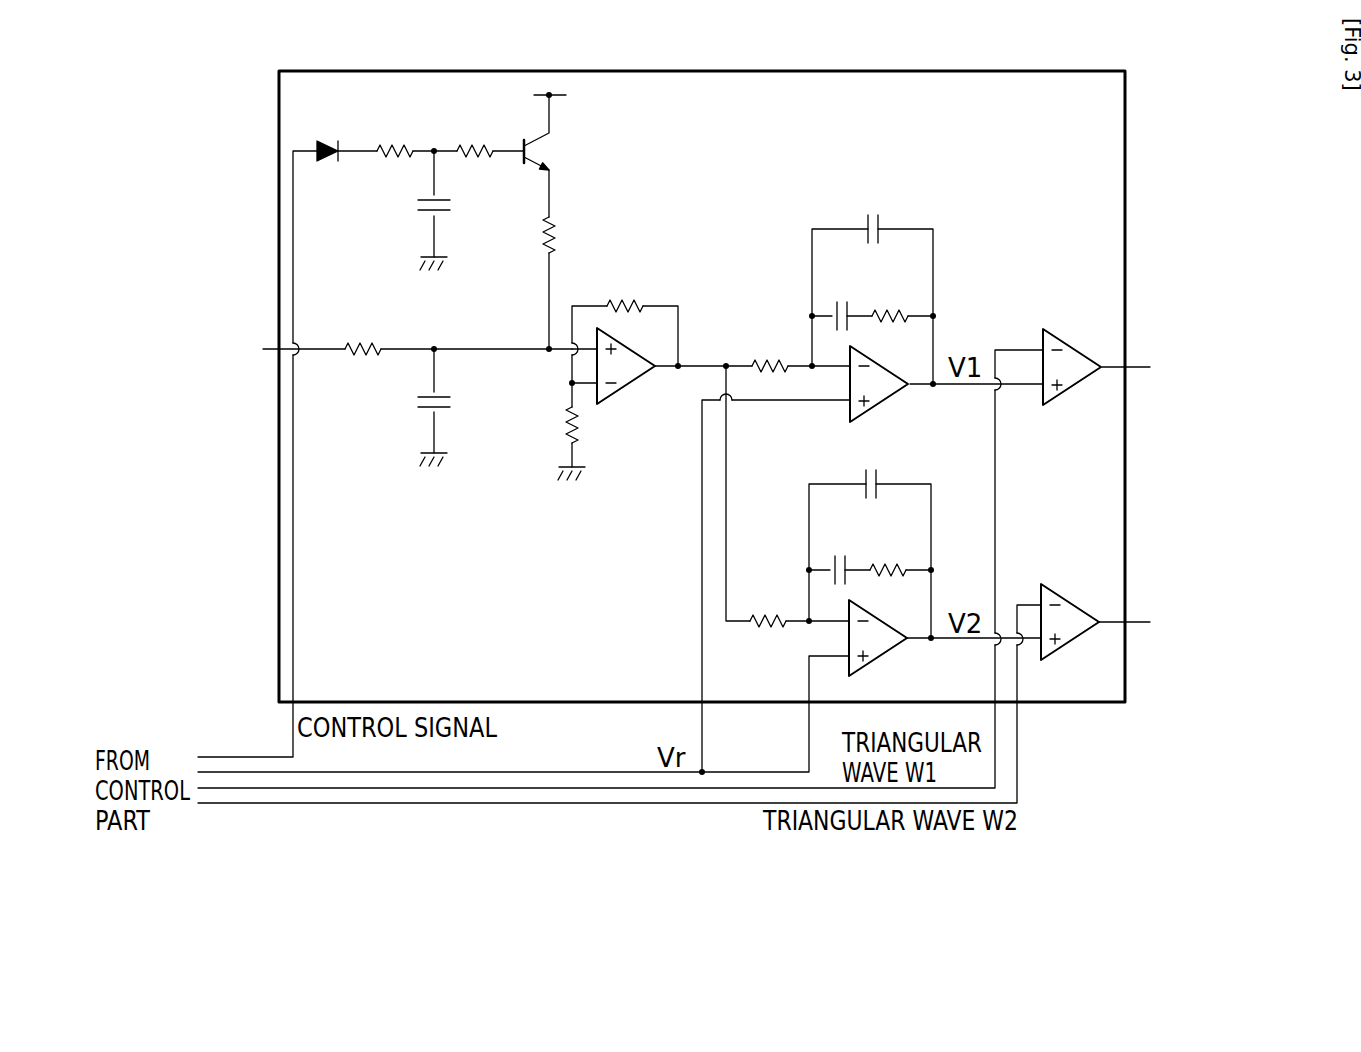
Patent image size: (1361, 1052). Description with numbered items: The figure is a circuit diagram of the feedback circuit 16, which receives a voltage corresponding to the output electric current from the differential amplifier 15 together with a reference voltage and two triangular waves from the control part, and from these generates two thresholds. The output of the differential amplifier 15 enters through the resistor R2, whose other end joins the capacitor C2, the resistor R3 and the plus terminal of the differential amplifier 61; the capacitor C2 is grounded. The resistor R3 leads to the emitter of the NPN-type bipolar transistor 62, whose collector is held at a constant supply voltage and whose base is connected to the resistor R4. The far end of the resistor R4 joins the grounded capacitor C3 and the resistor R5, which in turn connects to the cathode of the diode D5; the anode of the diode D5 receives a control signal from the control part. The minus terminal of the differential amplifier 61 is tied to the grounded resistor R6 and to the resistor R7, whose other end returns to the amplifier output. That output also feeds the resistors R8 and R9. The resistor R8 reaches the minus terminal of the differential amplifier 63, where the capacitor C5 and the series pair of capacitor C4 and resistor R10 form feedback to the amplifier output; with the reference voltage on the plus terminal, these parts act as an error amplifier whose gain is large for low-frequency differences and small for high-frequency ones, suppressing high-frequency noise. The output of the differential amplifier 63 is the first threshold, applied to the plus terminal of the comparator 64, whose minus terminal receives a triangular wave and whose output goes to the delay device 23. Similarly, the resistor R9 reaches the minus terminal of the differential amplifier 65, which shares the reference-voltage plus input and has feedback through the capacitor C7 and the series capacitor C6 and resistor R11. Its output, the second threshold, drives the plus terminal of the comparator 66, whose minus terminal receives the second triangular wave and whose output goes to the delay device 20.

The feedback circuit 16 is at (1127, 88).
The differential amplifier 61 is at (636, 396).
The NPN-type bipolar transistor 62 is at (555, 153).
The differential amplifier 63 is at (880, 405).
The comparator 64 is at (1076, 345).
The differential amplifier 65 is at (880, 660).
The comparator 66 is at (1075, 599).
The differential amplifier 15 is at (182, 377).
The delay device 20 is at (1216, 638).
The delay device 23 is at (1216, 384).
The diode D5 is at (331, 132).
The resistor R2 is at (370, 334).
The resistor R3 is at (536, 234).
The resistor R4 is at (472, 139).
The resistor R5 is at (398, 139).
The resistor R6 is at (557, 424).
The resistor R7 is at (628, 295).
The resistor R8 is at (773, 354).
The resistor R9 is at (770, 607).
The resistor R10 is at (885, 305).
The resistor R11 is at (879, 562).
The capacitor C2 is at (415, 401).
The capacitor C3 is at (415, 204).
The capacitor C4 is at (840, 300).
The capacitor C5 is at (873, 207).
The capacitor C6 is at (840, 554).
The capacitor C7 is at (885, 474).